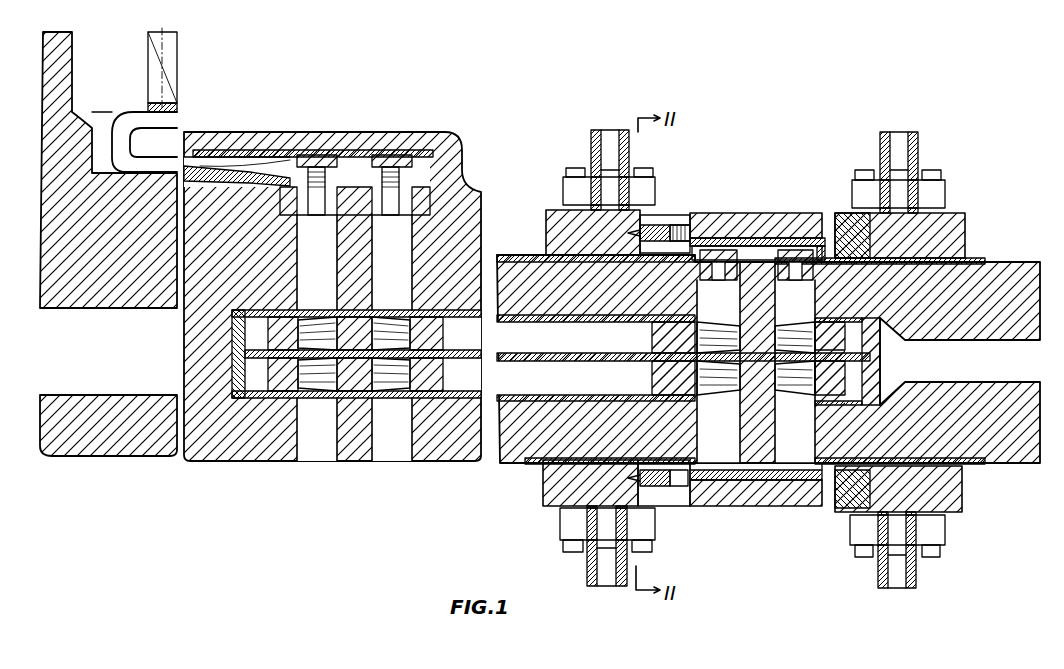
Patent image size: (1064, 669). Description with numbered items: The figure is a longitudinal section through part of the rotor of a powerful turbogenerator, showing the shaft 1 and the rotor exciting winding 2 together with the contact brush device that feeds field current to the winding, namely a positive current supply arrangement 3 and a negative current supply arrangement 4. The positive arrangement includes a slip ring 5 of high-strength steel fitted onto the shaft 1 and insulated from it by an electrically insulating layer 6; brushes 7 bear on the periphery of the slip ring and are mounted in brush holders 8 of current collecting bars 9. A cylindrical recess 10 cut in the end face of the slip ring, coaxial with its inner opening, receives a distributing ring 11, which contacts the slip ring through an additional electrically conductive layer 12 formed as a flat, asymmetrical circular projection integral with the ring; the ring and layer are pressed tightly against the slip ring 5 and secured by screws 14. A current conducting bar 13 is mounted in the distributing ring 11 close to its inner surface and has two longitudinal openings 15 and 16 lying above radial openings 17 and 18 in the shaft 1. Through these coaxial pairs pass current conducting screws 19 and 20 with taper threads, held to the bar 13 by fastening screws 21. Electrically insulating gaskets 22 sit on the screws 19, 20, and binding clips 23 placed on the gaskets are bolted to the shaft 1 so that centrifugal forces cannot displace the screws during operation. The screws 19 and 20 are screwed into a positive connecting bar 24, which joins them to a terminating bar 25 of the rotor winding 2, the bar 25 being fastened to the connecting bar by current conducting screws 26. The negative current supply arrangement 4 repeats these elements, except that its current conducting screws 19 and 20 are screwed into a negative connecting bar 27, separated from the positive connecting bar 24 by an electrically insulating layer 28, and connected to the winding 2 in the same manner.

The shaft 1 is at (108, 456).
The rotor exciting winding 2 is at (173, 70).
The positive current supply arrangement 3 is at (609, 118).
The negative current supply arrangement 4 is at (913, 127).
The slip ring 5 is at (543, 495).
The electrically insulating layer 6 is at (538, 466).
The brushes 7 is at (563, 547).
The brush holders 8 is at (560, 520).
The current collecting bars 9 is at (587, 568).
The cylindrical recess 10 is at (662, 508).
The distributing ring 11 is at (670, 490).
The additional electrically conductive layer 12 is at (640, 310).
The current conducting bar 13 is at (790, 248).
The screws 14 is at (664, 215).
The opening 15 is at (680, 222).
The opening 16 is at (822, 246).
The opening 17 is at (697, 300).
The opening 18 is at (810, 302).
The current conducting screw 19 is at (768, 312).
The current conducting screw 20 is at (810, 280).
The fastening screws 21 is at (718, 250).
The electrically insulating gaskets 22 is at (738, 213).
The binding clips 23 is at (768, 238).
The positive connecting bar 24 is at (575, 330).
The terminating bar 25 is at (203, 160).
The current conducting screws 26 is at (382, 290).
The negative connecting bar 27 is at (578, 392).
The electrically insulating layer 28 is at (575, 362).